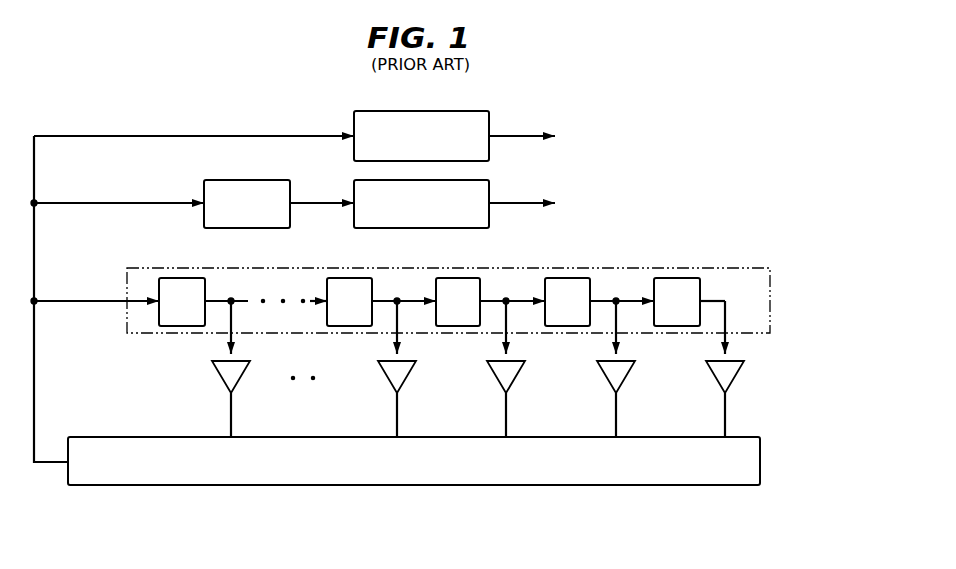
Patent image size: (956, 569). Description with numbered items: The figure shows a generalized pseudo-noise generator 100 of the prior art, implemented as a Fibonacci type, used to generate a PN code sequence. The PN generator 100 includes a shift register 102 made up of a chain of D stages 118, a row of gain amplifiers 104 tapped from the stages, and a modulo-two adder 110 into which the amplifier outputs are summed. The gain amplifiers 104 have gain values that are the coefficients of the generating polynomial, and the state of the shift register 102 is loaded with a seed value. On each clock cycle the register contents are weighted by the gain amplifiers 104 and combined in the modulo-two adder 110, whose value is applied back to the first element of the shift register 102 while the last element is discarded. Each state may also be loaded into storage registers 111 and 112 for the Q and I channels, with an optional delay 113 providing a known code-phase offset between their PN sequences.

The PN generator 100 is at (231, 103).
The shift register 102 is at (722, 268).
The gain amplifiers 104 is at (222, 381).
The modulo-2 adder 110 is at (762, 462).
The register 111 is at (467, 111).
The register 112 is at (490, 180).
The delay 113 is at (236, 180).
The D flip-flop stage 118 is at (170, 277).